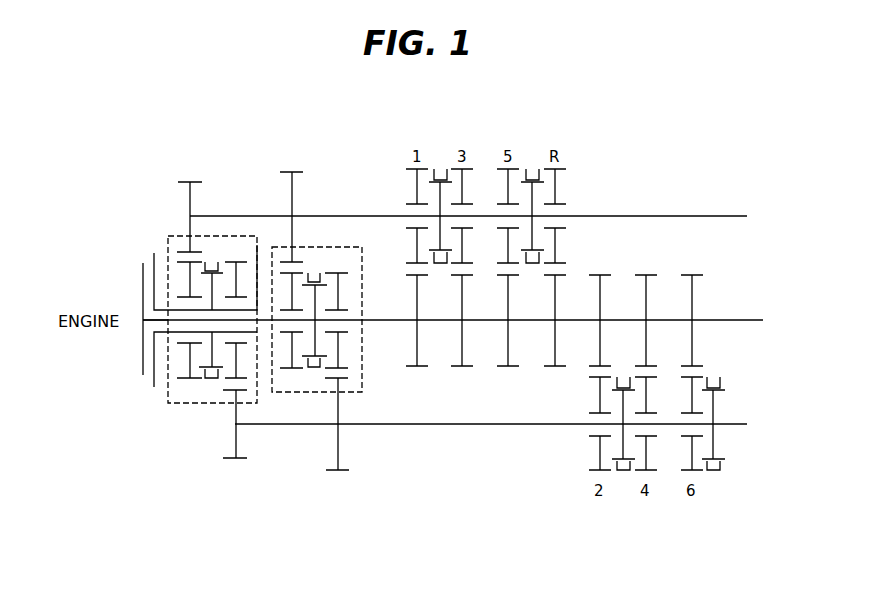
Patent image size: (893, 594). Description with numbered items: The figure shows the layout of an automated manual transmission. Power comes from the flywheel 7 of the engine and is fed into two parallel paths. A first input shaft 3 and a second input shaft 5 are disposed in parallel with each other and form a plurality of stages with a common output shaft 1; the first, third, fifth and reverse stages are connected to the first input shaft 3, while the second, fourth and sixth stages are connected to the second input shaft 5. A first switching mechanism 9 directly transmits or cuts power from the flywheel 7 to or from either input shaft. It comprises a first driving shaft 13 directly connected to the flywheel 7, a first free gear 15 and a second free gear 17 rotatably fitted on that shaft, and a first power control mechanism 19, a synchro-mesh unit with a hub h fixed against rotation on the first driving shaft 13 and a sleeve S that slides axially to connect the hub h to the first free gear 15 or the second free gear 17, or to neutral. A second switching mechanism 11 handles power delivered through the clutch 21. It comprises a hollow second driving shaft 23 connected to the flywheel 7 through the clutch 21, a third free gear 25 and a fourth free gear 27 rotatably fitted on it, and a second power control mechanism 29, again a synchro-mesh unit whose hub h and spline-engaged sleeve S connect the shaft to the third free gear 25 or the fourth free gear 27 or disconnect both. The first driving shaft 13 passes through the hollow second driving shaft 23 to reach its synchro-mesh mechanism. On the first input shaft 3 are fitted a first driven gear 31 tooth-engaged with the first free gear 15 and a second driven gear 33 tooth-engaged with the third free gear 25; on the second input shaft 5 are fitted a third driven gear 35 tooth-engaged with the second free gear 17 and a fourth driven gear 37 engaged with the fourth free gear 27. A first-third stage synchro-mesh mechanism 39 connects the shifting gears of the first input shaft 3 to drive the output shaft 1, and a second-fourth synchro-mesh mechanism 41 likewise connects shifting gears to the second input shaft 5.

The output shaft 1 is at (744, 320).
The first input shaft 3 is at (665, 215).
The second input shaft 5 is at (735, 424).
The flywheel 7 is at (143, 343).
The first switching mechanism 9 is at (362, 387).
The second switching mechanism 11 is at (172, 403).
The first driving shaft 13 is at (153, 310).
The first free gear 15 is at (289, 375).
The second free gear 17 is at (343, 268).
The first power control mechanism 19 is at (317, 376).
The clutch 21 is at (131, 268).
The second driving shaft 23 is at (176, 336).
The third free gear 25 is at (183, 380).
The fourth free gear 27 is at (240, 255).
The second power control mechanism 29 is at (208, 384).
The first driven gear 31 is at (293, 168).
The second driven gear 33 is at (189, 180).
The third driven gear 35 is at (334, 478).
The fourth driven gear 37 is at (229, 465).
The first-third stage synchro-mesh mechanism 39 is at (440, 168).
The second-fourth synchro-mesh mechanism 41 is at (620, 474).
The sleeve S is at (220, 252).
The hub h is at (212, 288).